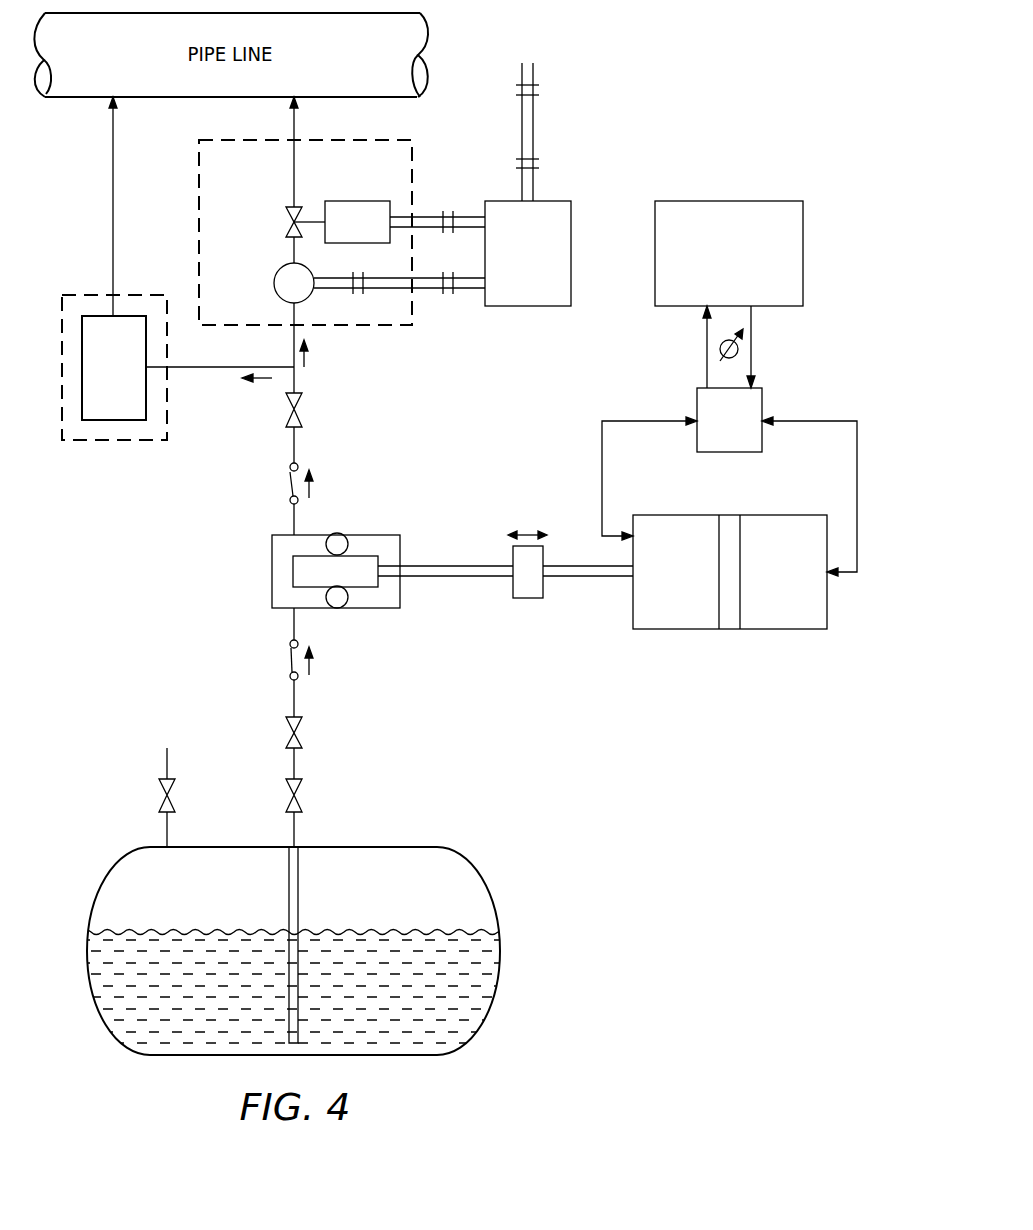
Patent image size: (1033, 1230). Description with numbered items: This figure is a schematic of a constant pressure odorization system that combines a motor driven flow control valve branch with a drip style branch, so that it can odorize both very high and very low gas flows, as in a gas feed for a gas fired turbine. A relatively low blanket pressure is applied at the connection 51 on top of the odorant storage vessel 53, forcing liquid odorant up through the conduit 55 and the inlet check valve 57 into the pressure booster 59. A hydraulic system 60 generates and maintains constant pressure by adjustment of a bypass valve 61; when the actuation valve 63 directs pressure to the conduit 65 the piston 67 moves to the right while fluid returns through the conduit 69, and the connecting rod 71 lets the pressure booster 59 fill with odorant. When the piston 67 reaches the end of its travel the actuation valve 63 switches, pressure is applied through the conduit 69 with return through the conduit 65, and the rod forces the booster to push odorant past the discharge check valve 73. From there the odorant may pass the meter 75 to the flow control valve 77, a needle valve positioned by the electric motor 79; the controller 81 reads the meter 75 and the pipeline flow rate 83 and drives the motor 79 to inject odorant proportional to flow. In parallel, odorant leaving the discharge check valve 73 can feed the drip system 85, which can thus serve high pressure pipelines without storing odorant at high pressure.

The connection 51 is at (162, 787).
The odorant storage vessel 53 is at (392, 847).
The conduit 55 is at (288, 900).
The inlet check valve 57 is at (288, 653).
The pressure booster 59 is at (272, 561).
The hydraulic system 60 is at (776, 201).
The bypass valve 61 is at (740, 346).
The actuation valve 63 is at (765, 403).
The conduit 65 is at (600, 486).
The piston 67 is at (735, 630).
The conduit 69 is at (858, 487).
The connecting rod 71 is at (445, 578).
The discharge check valve 73 is at (289, 480).
The meter 75 is at (276, 278).
The flow control valve 77 is at (288, 228).
The electric motor 79 is at (352, 201).
The controller 81 is at (571, 243).
The pipeline flow rate 83 is at (534, 116).
The drip system 85 is at (127, 383).